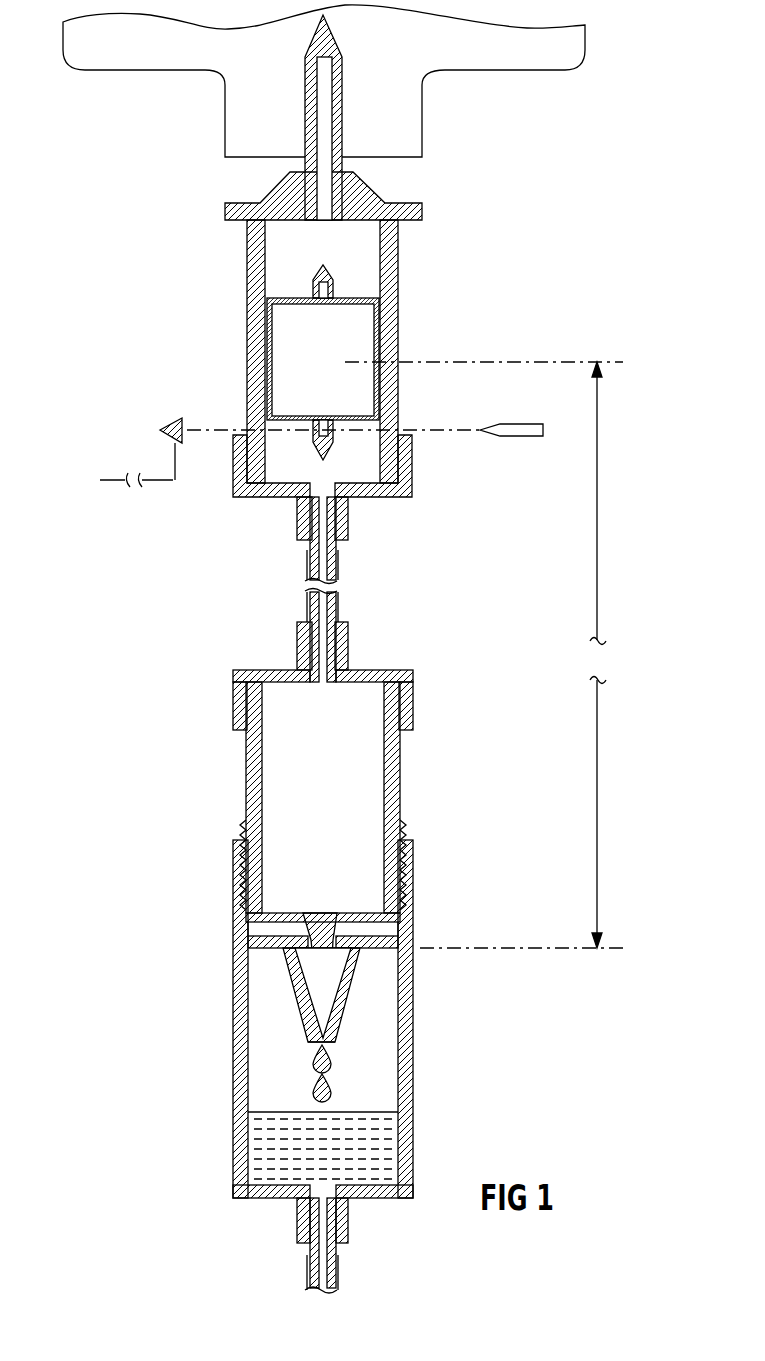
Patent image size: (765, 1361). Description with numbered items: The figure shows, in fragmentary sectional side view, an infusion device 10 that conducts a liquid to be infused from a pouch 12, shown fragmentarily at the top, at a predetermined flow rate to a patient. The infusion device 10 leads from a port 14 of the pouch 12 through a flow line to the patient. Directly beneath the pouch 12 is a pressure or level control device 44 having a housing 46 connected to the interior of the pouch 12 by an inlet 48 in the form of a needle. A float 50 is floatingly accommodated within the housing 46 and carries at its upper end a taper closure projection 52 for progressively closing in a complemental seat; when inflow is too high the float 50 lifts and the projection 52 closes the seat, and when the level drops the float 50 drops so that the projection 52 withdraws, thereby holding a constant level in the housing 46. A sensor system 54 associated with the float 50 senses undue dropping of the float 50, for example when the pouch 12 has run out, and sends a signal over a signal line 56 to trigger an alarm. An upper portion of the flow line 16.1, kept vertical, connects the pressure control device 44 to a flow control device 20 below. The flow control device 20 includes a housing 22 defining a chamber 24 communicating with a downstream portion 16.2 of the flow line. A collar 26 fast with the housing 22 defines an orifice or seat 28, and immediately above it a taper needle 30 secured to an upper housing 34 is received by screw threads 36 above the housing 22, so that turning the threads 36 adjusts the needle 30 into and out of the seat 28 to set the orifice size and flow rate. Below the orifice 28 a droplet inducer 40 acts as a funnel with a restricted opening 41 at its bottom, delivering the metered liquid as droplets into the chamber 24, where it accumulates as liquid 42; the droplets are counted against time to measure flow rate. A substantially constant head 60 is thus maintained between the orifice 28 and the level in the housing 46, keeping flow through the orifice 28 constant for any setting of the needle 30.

The infusion device 10 is at (622, 143).
The pouch 12 is at (560, 47).
The port 14 is at (245, 122).
The upper portion of the flow line 16.1 is at (337, 583).
The downstream portion of the flow line 16.2 is at (333, 1287).
The flow control device 20 is at (190, 893).
The housing 22 is at (412, 1072).
The chamber 24 is at (302, 1075).
The collar 26 is at (387, 941).
The orifice or seat 28 is at (300, 932).
The taper needle 30 is at (325, 918).
The upper housing 34 is at (399, 768).
The screw threads 36 is at (404, 881).
The droplet inducer 40 is at (347, 990).
The restricted opening 41 is at (303, 1027).
The accumulated liquid 42 is at (277, 1140).
The pressure or level control device 44 is at (485, 333).
The housing 46 is at (398, 318).
The inlet 48 is at (333, 123).
The float 50 is at (292, 363).
The taper closure projection 52 is at (324, 290).
The sensor system 54 is at (183, 443).
The signal line 56 is at (162, 484).
The constant head 60 is at (626, 652).